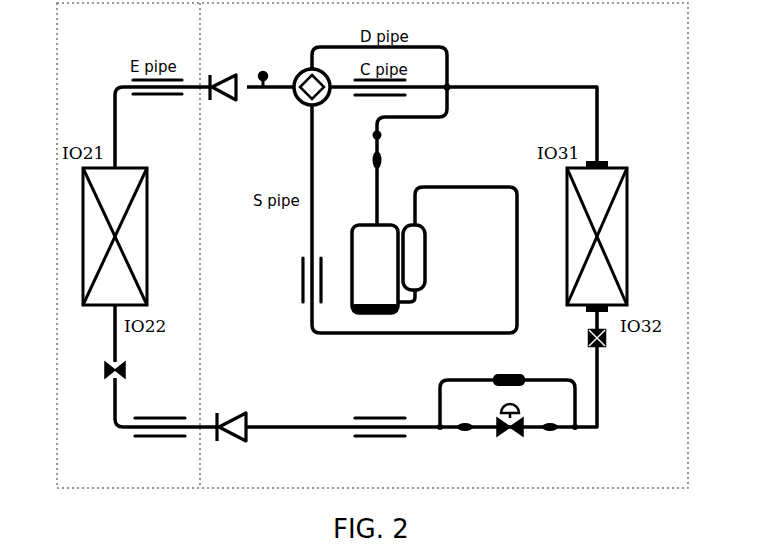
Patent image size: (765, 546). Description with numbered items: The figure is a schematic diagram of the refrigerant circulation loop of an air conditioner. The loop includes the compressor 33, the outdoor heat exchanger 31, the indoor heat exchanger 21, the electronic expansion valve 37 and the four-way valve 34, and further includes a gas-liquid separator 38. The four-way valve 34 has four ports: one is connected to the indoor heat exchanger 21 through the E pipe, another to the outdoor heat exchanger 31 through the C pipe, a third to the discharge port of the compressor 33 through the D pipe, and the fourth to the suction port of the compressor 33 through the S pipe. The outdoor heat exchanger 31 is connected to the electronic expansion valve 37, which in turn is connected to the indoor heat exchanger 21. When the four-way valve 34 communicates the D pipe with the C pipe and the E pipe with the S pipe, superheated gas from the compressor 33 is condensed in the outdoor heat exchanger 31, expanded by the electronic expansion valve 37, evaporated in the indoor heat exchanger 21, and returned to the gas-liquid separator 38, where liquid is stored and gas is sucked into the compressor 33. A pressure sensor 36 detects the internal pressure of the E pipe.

The indoor heat exchanger 21 is at (122, 165).
The outdoor heat exchanger 31 is at (627, 166).
The compressor 33 is at (352, 223).
The four-way valve 34 is at (298, 104).
The pressure sensor 36 is at (268, 72).
The electronic expansion valve 37 is at (505, 437).
The gas-liquid separator 38 is at (425, 257).